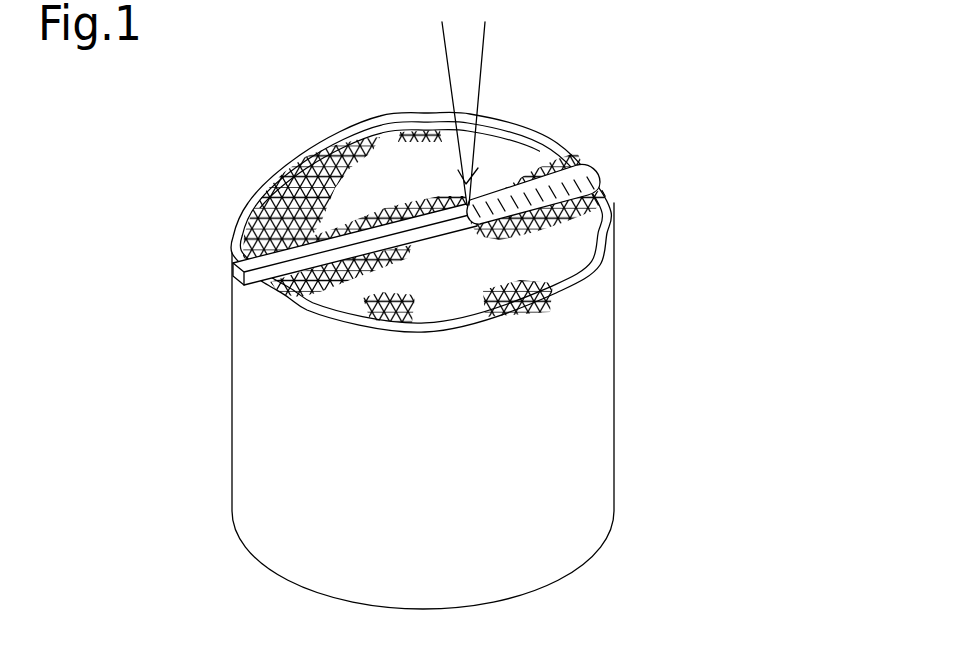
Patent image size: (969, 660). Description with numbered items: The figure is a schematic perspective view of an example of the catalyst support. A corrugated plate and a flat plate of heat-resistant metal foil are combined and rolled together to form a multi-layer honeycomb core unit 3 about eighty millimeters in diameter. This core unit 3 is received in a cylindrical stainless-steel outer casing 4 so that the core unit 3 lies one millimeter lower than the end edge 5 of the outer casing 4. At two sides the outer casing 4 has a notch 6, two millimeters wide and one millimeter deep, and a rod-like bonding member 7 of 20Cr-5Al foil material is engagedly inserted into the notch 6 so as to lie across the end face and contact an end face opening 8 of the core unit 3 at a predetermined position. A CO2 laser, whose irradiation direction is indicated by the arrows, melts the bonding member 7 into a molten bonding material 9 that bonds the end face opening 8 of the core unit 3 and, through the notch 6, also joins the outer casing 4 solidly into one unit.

The core unit 3 is at (330, 150).
The outer casing 4 is at (582, 412).
The end edge 5 is at (248, 173).
The notch 6 is at (267, 290).
The rod-like bonding member 7 is at (233, 258).
The end face opening 8 is at (608, 200).
The molten bonding material 9 is at (577, 163).